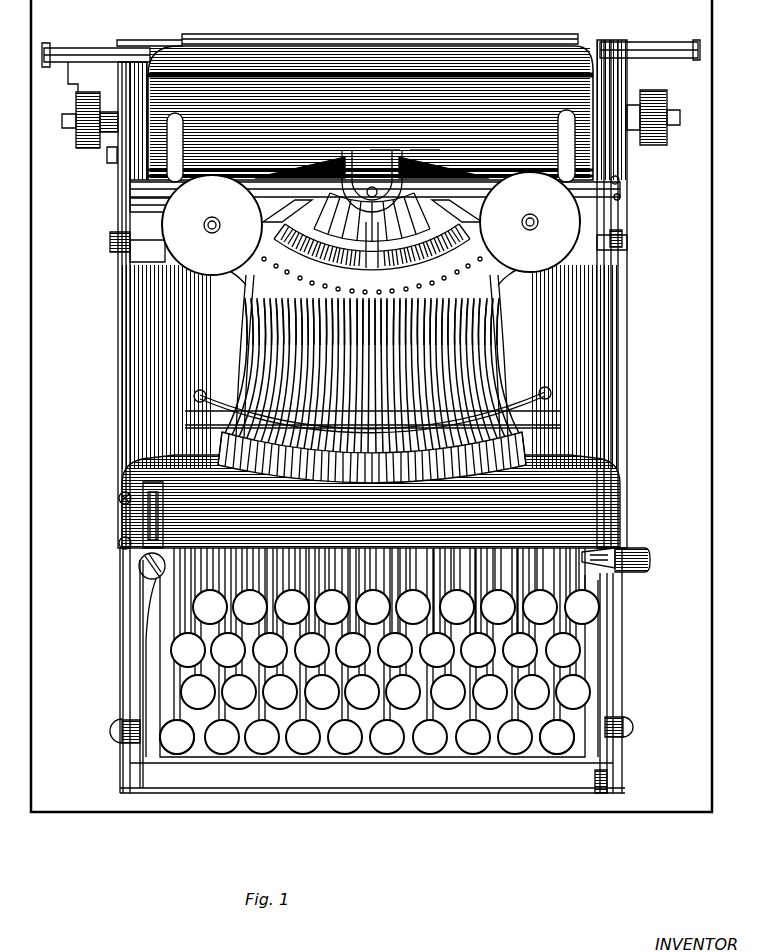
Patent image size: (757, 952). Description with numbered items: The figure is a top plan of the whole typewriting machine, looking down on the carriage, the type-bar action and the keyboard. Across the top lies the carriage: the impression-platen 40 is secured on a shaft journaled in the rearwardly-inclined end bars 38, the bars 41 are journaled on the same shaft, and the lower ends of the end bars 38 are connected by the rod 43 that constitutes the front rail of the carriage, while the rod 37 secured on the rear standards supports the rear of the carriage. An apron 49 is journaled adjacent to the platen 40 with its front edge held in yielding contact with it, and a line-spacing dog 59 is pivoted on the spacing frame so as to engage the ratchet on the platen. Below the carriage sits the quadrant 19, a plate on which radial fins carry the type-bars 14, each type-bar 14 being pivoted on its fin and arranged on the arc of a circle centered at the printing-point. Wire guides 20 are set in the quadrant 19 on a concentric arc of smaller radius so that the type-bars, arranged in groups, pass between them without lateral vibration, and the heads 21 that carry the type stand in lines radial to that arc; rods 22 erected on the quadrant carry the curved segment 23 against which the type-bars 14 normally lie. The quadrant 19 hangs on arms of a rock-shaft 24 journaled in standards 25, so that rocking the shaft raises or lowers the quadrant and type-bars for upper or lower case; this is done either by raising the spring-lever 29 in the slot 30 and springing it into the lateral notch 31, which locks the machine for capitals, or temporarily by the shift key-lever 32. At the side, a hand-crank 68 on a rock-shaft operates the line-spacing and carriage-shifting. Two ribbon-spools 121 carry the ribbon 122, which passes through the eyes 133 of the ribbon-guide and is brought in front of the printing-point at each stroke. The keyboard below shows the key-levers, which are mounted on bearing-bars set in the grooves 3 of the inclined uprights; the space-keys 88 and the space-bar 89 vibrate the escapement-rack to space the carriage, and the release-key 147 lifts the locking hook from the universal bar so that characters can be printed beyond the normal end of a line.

The parallel grooves 3 is at (375, 186).
The type-bar 14 is at (375, 375).
The quadrant 19 is at (373, 258).
The guides 20 is at (378, 218).
The heads 21 is at (371, 490).
The rods 22 is at (371, 352).
The curved segment 23 is at (372, 404).
The rock-shaft 24 is at (112, 240).
The standards 25 is at (622, 239).
The spring-lever 29 is at (139, 572).
The slot 30 is at (143, 522).
The lateral notch 31 is at (122, 493).
The key-lever 32 is at (177, 737).
The rod 37 is at (96, 60).
The end bars 38 is at (146, 305).
The platen 40 is at (370, 114).
The bars 41 is at (91, 109).
The rod 43 is at (628, 187).
The apron 49 is at (347, 31).
The line-spacing dog 59 is at (604, 46).
The hand-crank 68 is at (627, 560).
The space-keys 88 is at (145, 672).
The space-bar 89 is at (372, 780).
The ribbon-spools 121 is at (371, 223).
The ribbon 122 is at (386, 139).
The loop or eye 133 is at (423, 139).
The release-key 147 is at (557, 737).